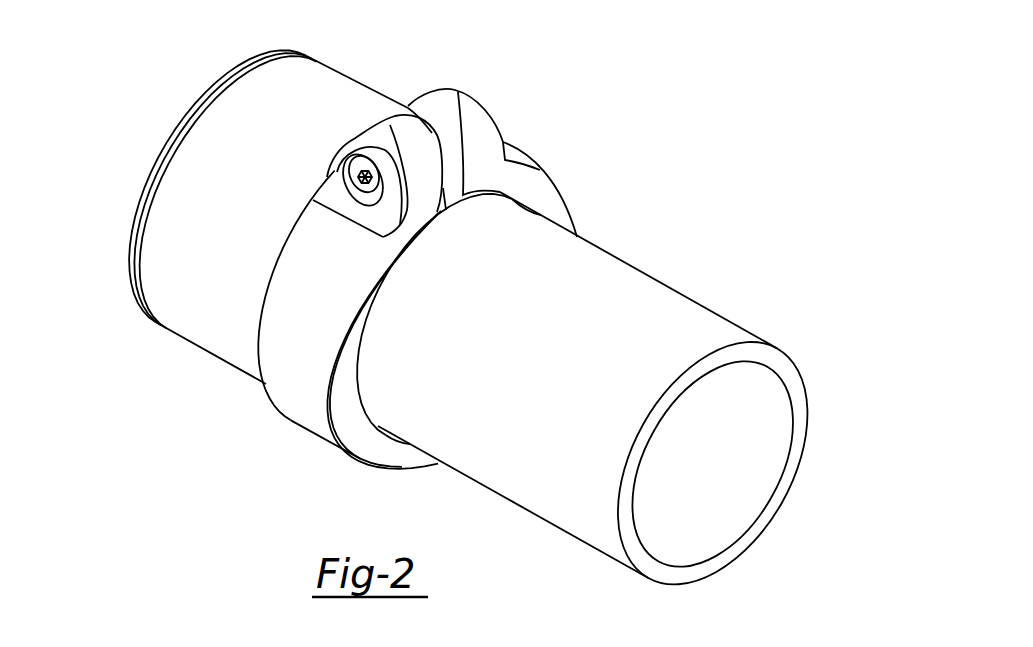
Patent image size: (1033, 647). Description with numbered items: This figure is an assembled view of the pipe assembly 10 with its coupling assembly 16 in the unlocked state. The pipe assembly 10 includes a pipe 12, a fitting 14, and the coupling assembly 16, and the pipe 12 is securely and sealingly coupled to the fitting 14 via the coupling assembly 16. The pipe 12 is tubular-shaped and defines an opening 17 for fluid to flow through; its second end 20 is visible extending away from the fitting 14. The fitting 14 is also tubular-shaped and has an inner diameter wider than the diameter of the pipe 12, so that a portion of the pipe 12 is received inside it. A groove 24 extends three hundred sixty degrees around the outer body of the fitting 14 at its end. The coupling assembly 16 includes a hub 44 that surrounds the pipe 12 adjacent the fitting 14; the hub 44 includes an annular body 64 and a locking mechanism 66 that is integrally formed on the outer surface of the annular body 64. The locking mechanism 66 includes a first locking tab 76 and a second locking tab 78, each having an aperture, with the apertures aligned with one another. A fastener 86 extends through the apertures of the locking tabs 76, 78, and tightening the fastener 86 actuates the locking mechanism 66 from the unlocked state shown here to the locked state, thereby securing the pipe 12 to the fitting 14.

The pipe assembly 10 is at (724, 73).
The pipe 12 is at (612, 404).
The fitting 14 is at (226, 217).
The coupling assembly 16 is at (458, 239).
The opening 17 is at (728, 513).
The second end 20 is at (693, 307).
The groove 24 is at (137, 238).
The hub 44 is at (540, 142).
The annular body 64 is at (565, 185).
The locking mechanism 66 is at (452, 82).
The first locking tab 76 is at (380, 141).
The second locking tab 78 is at (467, 125).
The fastener 86 is at (355, 175).